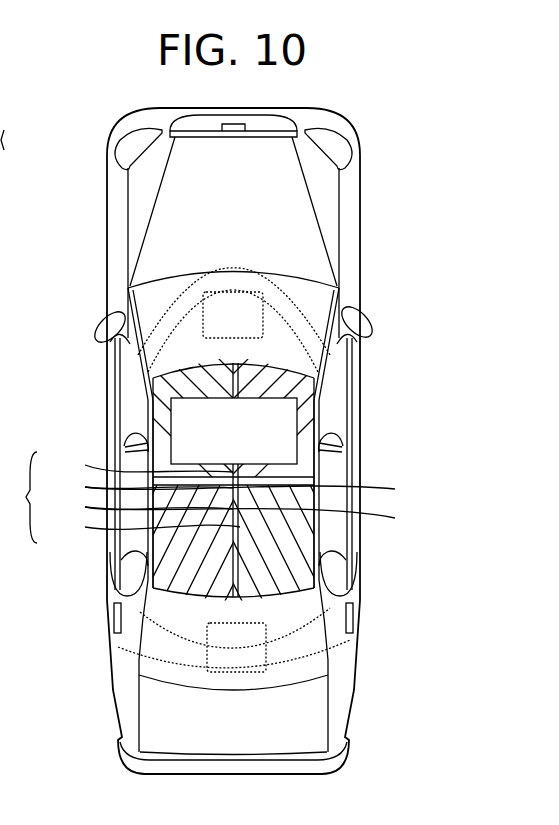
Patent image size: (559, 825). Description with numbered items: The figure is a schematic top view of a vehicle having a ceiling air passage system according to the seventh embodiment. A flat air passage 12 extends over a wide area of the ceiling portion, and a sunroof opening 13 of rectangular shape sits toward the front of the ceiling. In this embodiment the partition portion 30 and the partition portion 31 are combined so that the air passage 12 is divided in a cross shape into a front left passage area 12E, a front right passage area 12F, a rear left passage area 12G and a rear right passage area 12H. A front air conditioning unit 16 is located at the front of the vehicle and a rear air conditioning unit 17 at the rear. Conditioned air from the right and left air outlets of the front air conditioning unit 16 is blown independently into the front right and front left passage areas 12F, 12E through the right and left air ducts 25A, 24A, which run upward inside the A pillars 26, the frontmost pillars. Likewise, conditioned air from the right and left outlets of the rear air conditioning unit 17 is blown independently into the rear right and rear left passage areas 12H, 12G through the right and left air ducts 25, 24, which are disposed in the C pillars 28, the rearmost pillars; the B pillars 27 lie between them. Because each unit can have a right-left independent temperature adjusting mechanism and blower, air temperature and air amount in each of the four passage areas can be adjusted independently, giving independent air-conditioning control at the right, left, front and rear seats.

The air passage 12 is at (18, 497).
The front left passage area 12E is at (137, 467).
The front right passage area 12F is at (137, 510).
The rear left passage area 12G is at (137, 490).
The rear right passage area 12H is at (141, 532).
The sunroof opening 13 is at (278, 416).
The front air conditioning unit 16 is at (207, 292).
The rear air conditioning unit 17 is at (247, 675).
The left air duct 24 is at (118, 647).
The left air duct 24A is at (185, 310).
The right air duct 25 is at (350, 640).
The right air duct 25A is at (282, 310).
The A pillar 26 is at (140, 368).
The B pillar 27 is at (140, 440).
The C pillar 28 is at (145, 556).
The partition portion 30 is at (256, 509).
The partition portion 31 is at (256, 490).